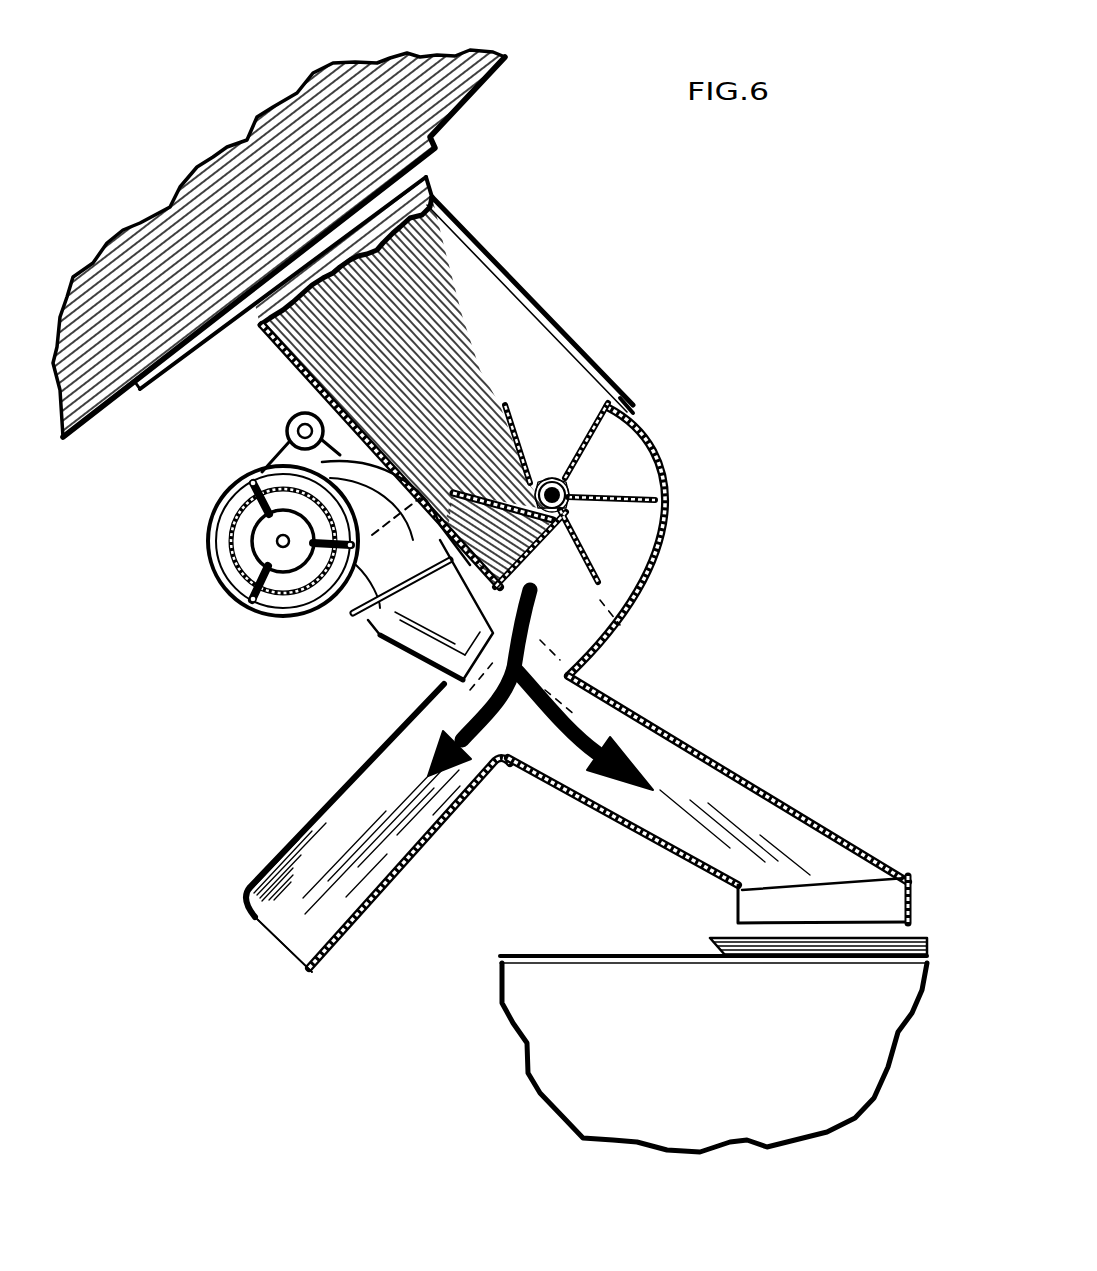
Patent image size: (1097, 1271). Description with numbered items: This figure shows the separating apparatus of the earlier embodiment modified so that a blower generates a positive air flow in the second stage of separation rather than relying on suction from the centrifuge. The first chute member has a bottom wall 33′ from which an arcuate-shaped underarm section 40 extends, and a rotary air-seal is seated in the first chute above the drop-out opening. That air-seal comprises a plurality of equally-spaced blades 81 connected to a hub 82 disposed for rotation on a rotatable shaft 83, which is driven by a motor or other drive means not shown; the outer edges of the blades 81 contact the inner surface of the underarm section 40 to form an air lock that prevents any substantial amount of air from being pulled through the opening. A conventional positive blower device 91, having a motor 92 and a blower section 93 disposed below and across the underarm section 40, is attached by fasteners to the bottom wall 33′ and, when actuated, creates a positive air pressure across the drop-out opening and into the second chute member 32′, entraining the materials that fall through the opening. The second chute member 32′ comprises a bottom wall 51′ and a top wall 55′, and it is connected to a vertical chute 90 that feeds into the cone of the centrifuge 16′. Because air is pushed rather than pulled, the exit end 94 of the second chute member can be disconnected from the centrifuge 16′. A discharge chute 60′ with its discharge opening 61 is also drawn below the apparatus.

The centrifuge 16′ is at (527, 953).
The second chute member 32′ is at (735, 766).
The bottom wall 33′ is at (280, 343).
The underarm section 40 is at (462, 538).
The bottom wall 51′ is at (575, 805).
The top wall 55′ is at (648, 710).
The discharge chute 60′ is at (366, 913).
The discharge opening 61 is at (250, 910).
The blades 81 is at (509, 412).
The hub 82 is at (560, 540).
The rotatable shaft 83 is at (568, 503).
The vertical chute 90 is at (737, 908).
The blower device 91 is at (260, 625).
The motor 92 is at (232, 502).
The blower section 93 is at (432, 679).
The exit end 94 is at (874, 920).